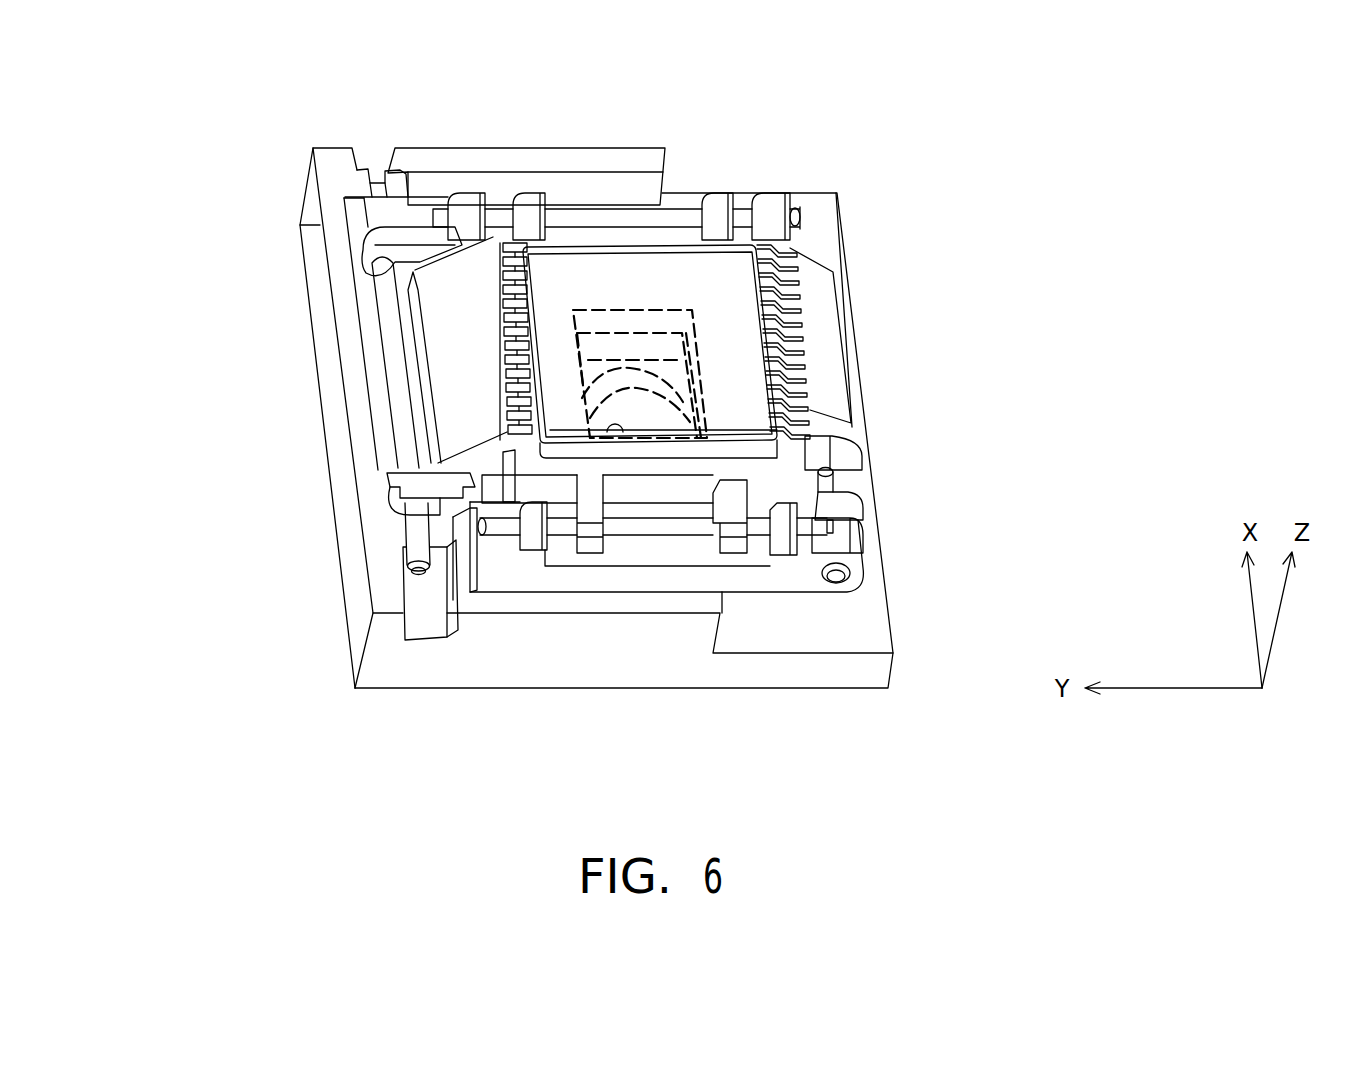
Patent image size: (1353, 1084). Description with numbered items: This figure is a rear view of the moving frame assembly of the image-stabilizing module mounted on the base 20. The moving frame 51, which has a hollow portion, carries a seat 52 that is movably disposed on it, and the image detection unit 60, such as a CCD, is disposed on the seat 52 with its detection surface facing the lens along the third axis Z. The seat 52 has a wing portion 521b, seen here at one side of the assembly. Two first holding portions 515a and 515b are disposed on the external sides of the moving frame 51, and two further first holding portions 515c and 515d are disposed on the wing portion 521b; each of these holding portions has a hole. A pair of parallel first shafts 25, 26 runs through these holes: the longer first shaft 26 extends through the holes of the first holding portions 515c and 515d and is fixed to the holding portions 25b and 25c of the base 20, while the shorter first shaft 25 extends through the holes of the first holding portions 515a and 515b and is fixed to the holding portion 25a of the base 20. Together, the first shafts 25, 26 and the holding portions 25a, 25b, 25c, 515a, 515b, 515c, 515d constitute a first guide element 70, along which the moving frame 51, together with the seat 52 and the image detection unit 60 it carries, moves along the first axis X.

The base 20 is at (552, 650).
The first shaft 25 is at (828, 478).
The holding portion 25a is at (853, 507).
The holding portion 25b is at (402, 535).
The holding portion 25c is at (355, 188).
The first shaft 26 is at (395, 363).
The moving frame 51 is at (780, 580).
The seat 52 is at (655, 490).
The image detection unit 60 is at (684, 317).
The first guide element 70 is at (133, 108).
The first holding portion 515a is at (857, 547).
The first holding portion 515b is at (840, 452).
The first holding portion 515c is at (400, 483).
The first holding portion 515d is at (383, 245).
The wing portion 521b is at (843, 332).